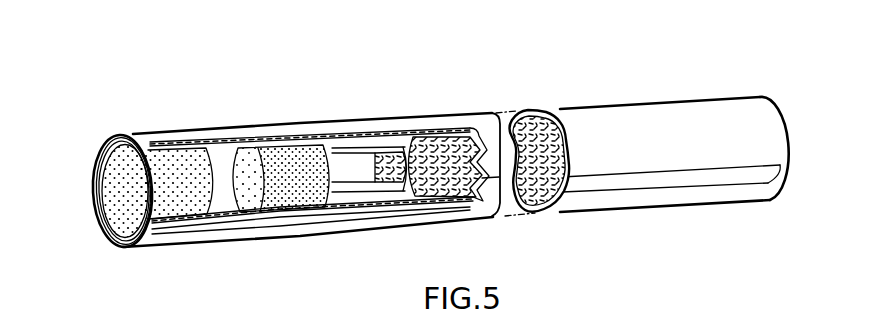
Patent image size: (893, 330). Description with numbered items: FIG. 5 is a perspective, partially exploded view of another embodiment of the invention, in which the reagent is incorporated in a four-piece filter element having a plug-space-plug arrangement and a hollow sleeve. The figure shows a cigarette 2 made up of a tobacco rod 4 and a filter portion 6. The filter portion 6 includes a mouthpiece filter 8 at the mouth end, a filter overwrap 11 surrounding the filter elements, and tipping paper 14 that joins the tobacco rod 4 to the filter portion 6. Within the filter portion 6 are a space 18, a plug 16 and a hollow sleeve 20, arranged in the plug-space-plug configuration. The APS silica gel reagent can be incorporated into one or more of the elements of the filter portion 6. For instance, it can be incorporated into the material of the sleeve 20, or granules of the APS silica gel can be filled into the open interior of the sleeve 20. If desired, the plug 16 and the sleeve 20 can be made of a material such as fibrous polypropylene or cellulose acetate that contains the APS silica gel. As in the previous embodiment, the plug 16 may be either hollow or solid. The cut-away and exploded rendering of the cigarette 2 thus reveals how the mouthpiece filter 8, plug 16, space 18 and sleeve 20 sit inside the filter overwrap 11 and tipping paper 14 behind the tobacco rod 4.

The cigarette 2 is at (252, 105).
The tobacco rod 4 is at (628, 122).
The filter portion 6 is at (175, 126).
The mouthpiece filter 8 is at (98, 158).
The filter overwrap 11 is at (117, 242).
The tipping paper 14 is at (318, 132).
The plug 16 is at (285, 192).
The space 18 is at (224, 192).
The hollow sleeve 20 is at (355, 192).